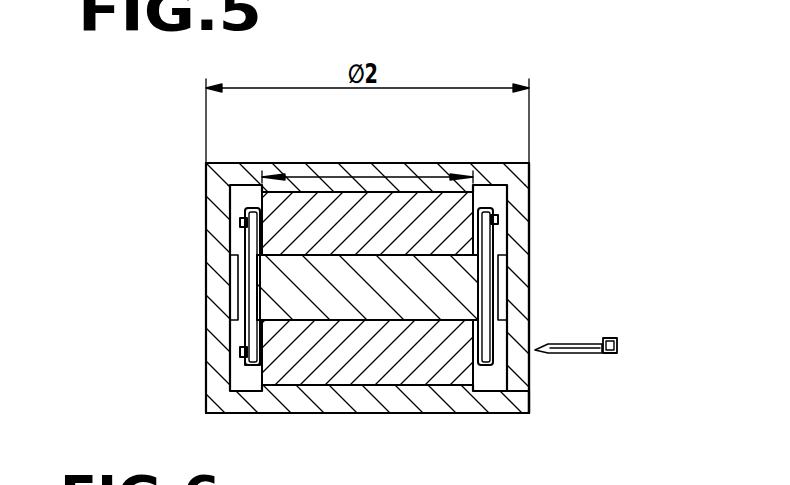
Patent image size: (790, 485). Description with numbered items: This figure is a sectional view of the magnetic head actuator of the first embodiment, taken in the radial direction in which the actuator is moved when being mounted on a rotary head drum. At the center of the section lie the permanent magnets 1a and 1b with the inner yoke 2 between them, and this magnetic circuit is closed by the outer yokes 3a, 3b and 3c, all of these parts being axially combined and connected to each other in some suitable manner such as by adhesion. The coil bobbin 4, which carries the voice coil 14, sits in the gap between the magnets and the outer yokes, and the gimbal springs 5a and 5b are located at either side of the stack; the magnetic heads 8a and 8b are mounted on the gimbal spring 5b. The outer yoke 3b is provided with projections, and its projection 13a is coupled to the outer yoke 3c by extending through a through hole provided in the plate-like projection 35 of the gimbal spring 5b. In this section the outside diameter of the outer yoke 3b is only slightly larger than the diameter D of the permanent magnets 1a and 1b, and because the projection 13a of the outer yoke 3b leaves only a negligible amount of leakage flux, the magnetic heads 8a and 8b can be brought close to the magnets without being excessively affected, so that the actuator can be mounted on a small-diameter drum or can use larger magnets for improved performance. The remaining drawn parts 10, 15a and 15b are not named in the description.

The permanent magnet 1a is at (302, 203).
The permanent magnet 1b is at (300, 362).
The inner yoke 2 is at (298, 288).
The outer yoke 3a is at (448, 165).
The outer yoke 3b is at (510, 304).
The outer yoke 3c is at (407, 398).
The coil bobbin 4 is at (497, 242).
The gimbal spring 5a is at (243, 221).
The gimbal spring 5b is at (245, 354).
The magnetic head 8a is at (617, 345).
The magnetic head 8b is at (665, 326).
The first coil 10 is at (252, 299).
The projection 13a is at (530, 397).
The voice coil 14 is at (494, 277).
The second coil upper terminal 15a is at (498, 219).
The first coil lower terminal 15b is at (250, 362).
The plate-like projection 35 is at (550, 354).
The diameter of the permanent magnets D is at (380, 172).